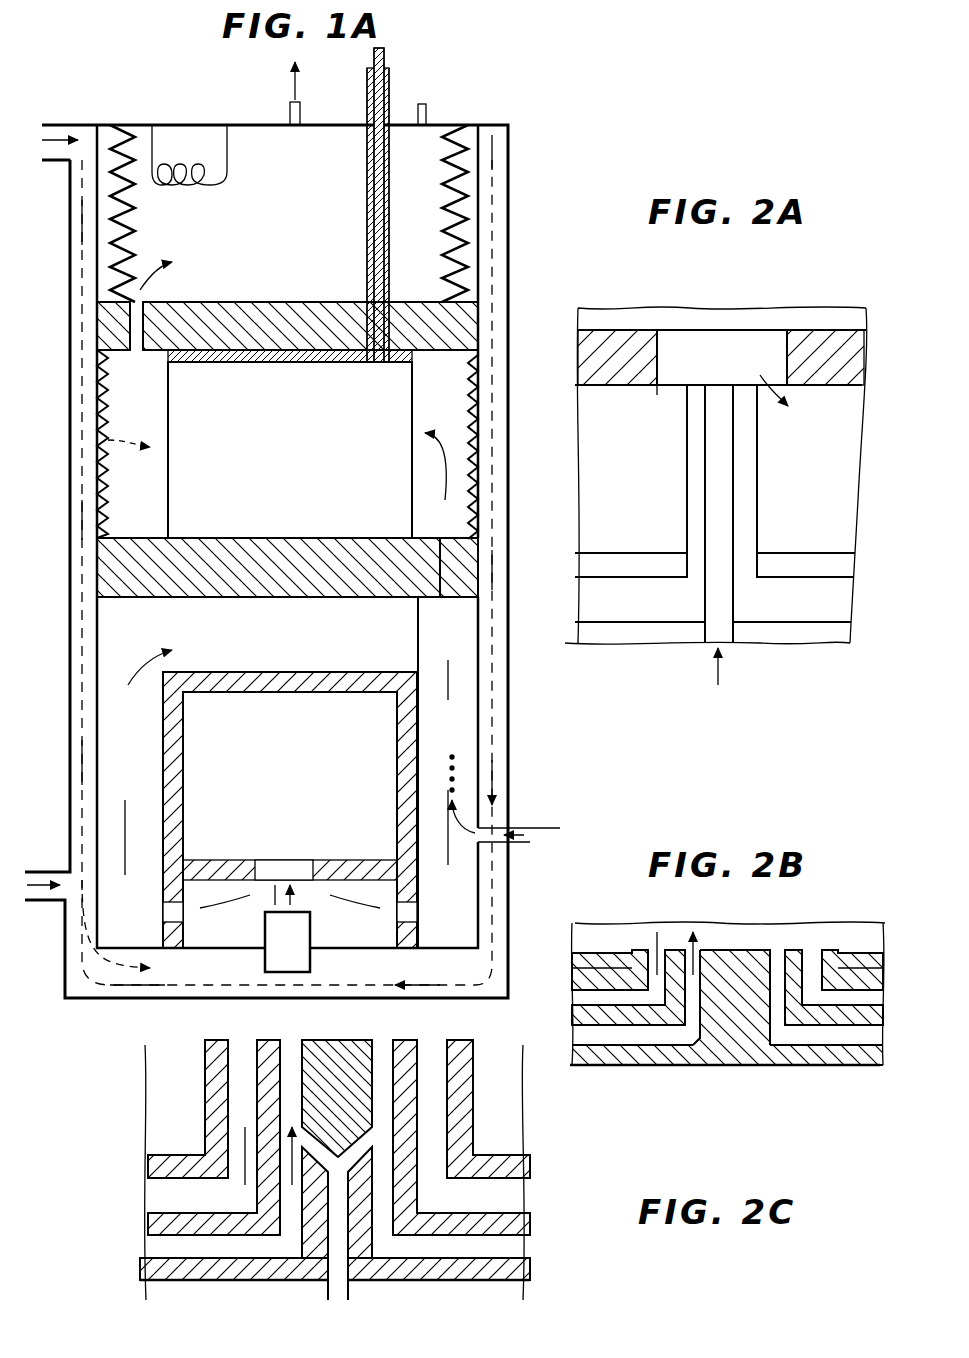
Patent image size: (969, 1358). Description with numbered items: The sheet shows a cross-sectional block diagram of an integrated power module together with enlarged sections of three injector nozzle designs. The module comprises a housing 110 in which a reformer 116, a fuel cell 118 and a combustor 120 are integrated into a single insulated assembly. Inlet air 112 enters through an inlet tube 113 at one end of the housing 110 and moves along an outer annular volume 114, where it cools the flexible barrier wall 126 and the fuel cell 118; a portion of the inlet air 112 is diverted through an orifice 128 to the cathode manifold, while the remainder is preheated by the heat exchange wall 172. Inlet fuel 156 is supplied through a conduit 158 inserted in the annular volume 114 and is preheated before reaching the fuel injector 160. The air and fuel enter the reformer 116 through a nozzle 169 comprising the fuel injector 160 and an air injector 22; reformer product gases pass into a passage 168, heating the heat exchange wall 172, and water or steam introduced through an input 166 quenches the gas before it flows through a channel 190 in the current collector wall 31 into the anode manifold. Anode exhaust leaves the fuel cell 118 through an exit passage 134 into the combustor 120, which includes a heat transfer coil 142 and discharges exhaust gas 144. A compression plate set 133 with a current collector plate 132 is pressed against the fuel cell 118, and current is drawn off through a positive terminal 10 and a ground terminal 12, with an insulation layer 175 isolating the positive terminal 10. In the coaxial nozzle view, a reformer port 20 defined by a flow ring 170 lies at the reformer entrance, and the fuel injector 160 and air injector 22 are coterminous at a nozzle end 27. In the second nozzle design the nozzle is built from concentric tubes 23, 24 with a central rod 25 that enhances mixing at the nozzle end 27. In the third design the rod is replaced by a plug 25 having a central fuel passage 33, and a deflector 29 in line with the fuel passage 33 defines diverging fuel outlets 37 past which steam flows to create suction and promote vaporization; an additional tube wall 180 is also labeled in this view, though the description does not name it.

In FIG. 1A, the positive terminal 10 is at (392, 60).
In FIG. 1A, the ground terminal 12 is at (428, 115).
In FIG. 2A, the reformer port 20 is at (660, 403).
In FIG. 2A, the air injector 22 is at (757, 443).
In FIG. 2B, the air injector 22 is at (817, 983).
In FIG. 2C, the air injector 22 is at (385, 1072).
In FIG. 2B, the concentric tube 23 is at (630, 953).
In FIG. 2C, the concentric tube 23 is at (413, 1130).
In FIG. 2B, the concentric tube 24 is at (673, 957).
In FIG. 2C, the concentric tube 24 is at (417, 1130).
In FIG. 2B, the central rod or plug 25 is at (745, 997).
In FIG. 2C, the central rod or plug 25 is at (357, 1223).
In FIG. 2A, the nozzle end 27 is at (718, 385).
In FIG. 2B, the nozzle end 27 is at (733, 947).
In FIG. 2C, the nozzle end 27 is at (345, 1045).
In FIG. 2C, the deflector 29 is at (305, 1048).
In FIG. 1A, the current collector wall 31 is at (100, 580).
In FIG. 2C, the fuel passage 33 is at (340, 1243).
In FIG. 2C, the fuel outlets 37 is at (343, 1162).
In FIG. 1A, the housing 110 is at (510, 209).
In FIG. 1A, the inlet air 112 is at (50, 135).
In FIG. 1A, the inlet tube 113 is at (58, 162).
In FIG. 1A, the annular volume 114 is at (70, 250).
In FIG. 1A, the reformer 116 is at (304, 800).
In FIG. 2A, the reformer 116 is at (818, 293).
In FIG. 2B, the reformer 116 is at (847, 940).
In FIG. 2C, the reformer 116 is at (160, 1080).
In FIG. 1A, the fuel cell 118 is at (304, 480).
In FIG. 1A, the combustor 120 is at (277, 258).
In FIG. 1A, the flexible barrier wall 126 is at (477, 400).
In FIG. 1A, the orifice 128 is at (103, 440).
In FIG. 1A, the current collector plate 132 is at (413, 356).
In FIG. 1A, the compression plate set 133 is at (462, 330).
In FIG. 1A, the exit passage 134 is at (137, 322).
In FIG. 1A, the heat transfer coil 142 is at (152, 104).
In FIG. 1A, the exhaust gas 144 is at (290, 92).
In FIG. 1A, the inlet fuel 156 is at (33, 892).
In FIG. 1A, the conduit 158 is at (40, 870).
In FIG. 2A, the fuel injector 160 is at (720, 492).
In FIG. 2B, the fuel injector 160 is at (693, 1008).
In FIG. 1A, the input 166 is at (547, 833).
In FIG. 1A, the passage 168 is at (450, 695).
In FIG. 1A, the nozzle 169 is at (288, 980).
In FIG. 2A, the nozzle 169 is at (757, 535).
In FIG. 2B, the nozzle 169 is at (638, 1067).
In FIG. 2C, the nozzle 169 is at (276, 1283).
In FIG. 2A, the flow ring 170 is at (673, 407).
In FIG. 1A, the heat exchange wall 172 is at (93, 662).
In FIG. 1A, the insulation layer 175 is at (392, 86).
In FIG. 2C, the wall 180 is at (415, 1062).
In FIG. 1A, the channel 190 is at (452, 583).